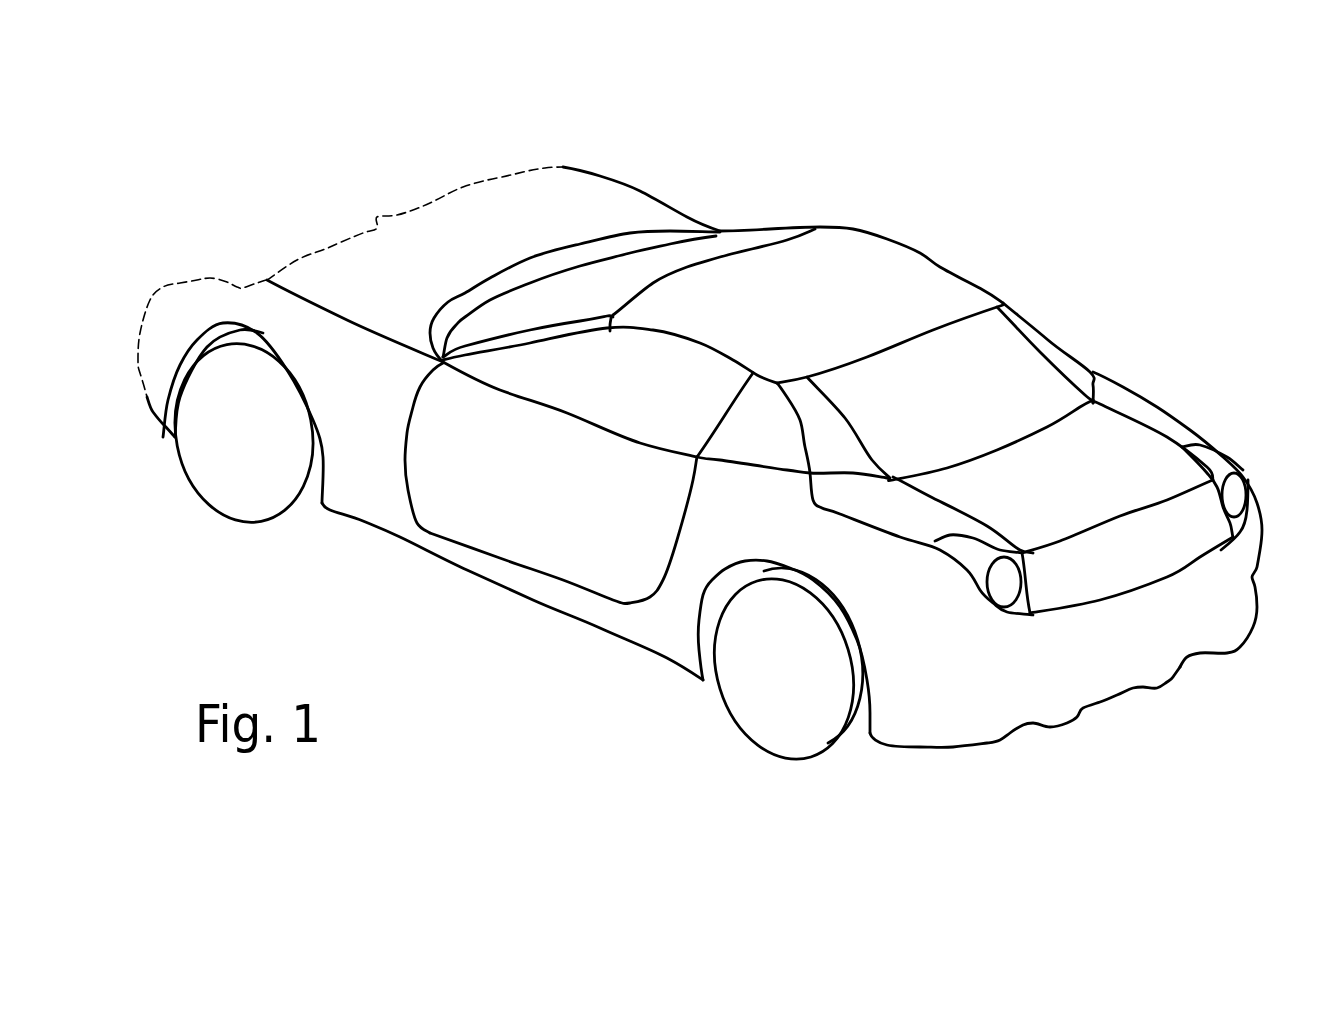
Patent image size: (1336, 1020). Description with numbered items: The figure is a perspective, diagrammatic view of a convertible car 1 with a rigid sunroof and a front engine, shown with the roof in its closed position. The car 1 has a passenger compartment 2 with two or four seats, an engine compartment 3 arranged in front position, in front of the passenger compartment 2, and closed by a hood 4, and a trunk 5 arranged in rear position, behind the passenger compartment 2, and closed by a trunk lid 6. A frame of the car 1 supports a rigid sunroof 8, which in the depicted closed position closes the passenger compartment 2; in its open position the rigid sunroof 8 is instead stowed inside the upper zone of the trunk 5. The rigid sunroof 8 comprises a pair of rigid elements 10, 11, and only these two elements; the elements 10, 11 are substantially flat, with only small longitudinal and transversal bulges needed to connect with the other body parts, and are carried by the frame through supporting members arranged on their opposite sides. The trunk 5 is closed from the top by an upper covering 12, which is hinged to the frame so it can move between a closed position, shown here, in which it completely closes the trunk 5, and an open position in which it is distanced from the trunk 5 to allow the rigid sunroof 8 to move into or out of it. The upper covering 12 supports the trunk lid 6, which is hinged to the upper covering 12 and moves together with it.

The car 1 is at (1084, 181).
The passenger compartment 2 is at (608, 400).
The engine compartment 3 is at (308, 220).
The hood 4 is at (450, 217).
The trunk 5 is at (1173, 380).
The trunk lid 6 is at (1127, 562).
The rigid sunroof 8 is at (776, 198).
The rigid element 10 is at (869, 268).
The rigid element 11 is at (984, 368).
The upper covering 12 is at (1124, 368).